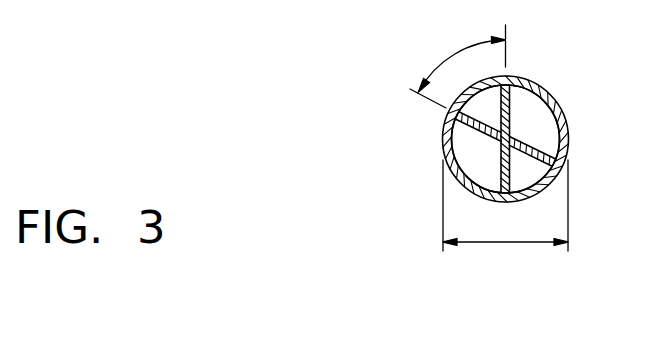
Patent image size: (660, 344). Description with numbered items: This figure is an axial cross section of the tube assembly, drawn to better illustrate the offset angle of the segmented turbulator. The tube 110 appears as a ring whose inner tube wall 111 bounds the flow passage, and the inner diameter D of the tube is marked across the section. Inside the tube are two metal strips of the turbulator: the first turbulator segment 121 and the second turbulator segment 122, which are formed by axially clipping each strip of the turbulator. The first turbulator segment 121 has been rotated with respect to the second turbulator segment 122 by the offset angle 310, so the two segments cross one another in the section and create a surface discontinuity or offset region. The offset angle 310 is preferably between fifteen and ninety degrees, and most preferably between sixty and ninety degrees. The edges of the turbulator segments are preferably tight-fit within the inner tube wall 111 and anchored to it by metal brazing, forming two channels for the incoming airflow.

The tube 110 is at (522, 81).
The inner tube wall 111 is at (461, 164).
The first turbulator segment 121 is at (511, 112).
The second turbulator segment 122 is at (546, 154).
The offset angle 310 is at (452, 55).
The inner diameter D is at (506, 240).